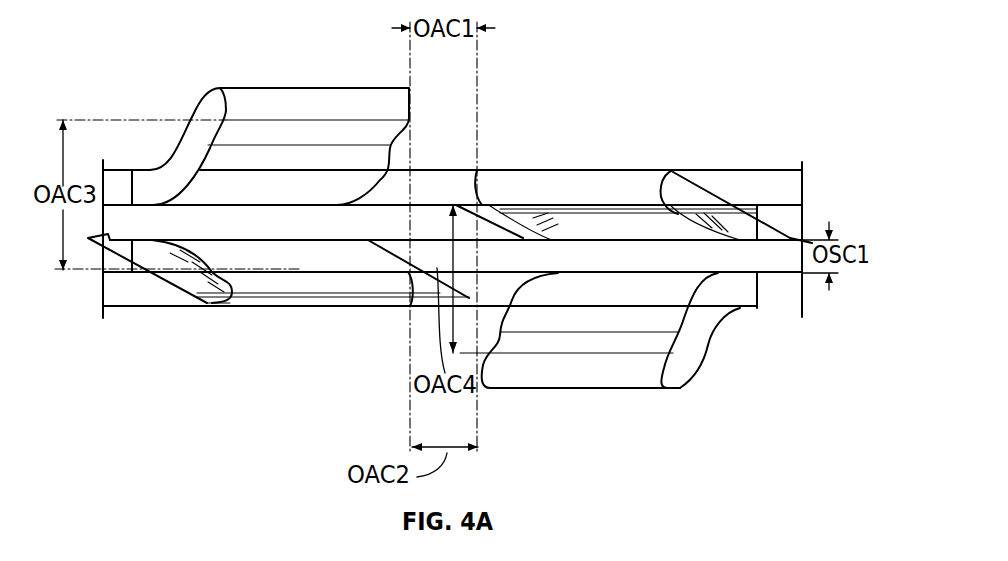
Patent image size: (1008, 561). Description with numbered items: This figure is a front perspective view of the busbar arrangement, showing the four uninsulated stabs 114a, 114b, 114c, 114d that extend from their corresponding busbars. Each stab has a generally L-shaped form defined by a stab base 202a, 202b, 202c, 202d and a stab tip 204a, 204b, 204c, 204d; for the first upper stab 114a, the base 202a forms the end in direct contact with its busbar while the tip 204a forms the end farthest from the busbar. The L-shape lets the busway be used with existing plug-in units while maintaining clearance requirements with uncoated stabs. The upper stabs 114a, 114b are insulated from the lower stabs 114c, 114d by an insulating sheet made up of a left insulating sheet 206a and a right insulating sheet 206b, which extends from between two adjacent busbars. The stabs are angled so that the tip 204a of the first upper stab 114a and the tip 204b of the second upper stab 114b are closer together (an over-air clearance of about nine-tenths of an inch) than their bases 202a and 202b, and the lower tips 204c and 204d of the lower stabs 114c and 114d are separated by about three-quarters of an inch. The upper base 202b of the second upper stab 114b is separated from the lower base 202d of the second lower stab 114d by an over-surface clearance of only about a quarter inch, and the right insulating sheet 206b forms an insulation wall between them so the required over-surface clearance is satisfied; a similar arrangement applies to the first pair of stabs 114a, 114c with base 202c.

The stab base 202a is at (128, 188).
The stab base 202b is at (785, 236).
The stab base 202c is at (452, 256).
The stab base 202d is at (762, 290).
The stab tip 204a is at (305, 102).
The stab tip 204b is at (582, 187).
The stab tip 204c is at (332, 306).
The stab tip 204d is at (590, 373).
The left insulating sheet 206a is at (153, 257).
The right insulating sheet 206b is at (503, 222).
The first upper stab 114a is at (211, 110).
The second upper stab 114b is at (692, 192).
The first lower stab 114c is at (180, 272).
The second lower stab 114d is at (710, 306).